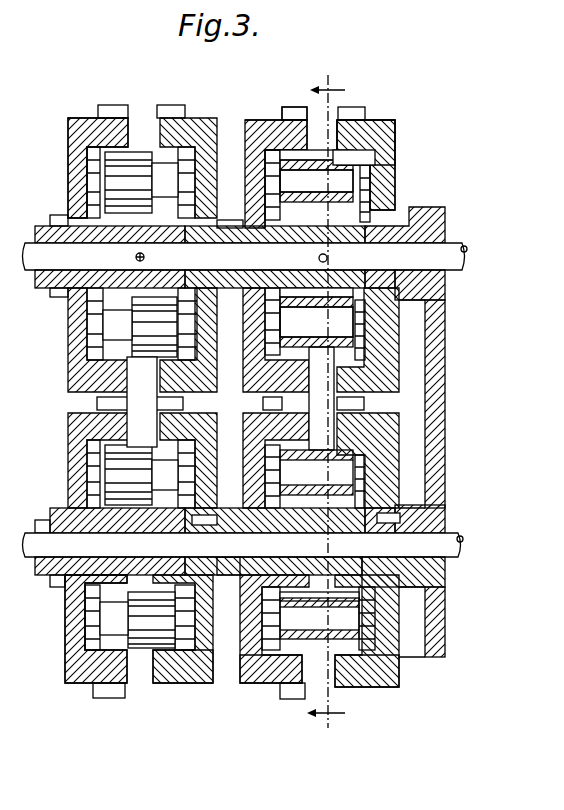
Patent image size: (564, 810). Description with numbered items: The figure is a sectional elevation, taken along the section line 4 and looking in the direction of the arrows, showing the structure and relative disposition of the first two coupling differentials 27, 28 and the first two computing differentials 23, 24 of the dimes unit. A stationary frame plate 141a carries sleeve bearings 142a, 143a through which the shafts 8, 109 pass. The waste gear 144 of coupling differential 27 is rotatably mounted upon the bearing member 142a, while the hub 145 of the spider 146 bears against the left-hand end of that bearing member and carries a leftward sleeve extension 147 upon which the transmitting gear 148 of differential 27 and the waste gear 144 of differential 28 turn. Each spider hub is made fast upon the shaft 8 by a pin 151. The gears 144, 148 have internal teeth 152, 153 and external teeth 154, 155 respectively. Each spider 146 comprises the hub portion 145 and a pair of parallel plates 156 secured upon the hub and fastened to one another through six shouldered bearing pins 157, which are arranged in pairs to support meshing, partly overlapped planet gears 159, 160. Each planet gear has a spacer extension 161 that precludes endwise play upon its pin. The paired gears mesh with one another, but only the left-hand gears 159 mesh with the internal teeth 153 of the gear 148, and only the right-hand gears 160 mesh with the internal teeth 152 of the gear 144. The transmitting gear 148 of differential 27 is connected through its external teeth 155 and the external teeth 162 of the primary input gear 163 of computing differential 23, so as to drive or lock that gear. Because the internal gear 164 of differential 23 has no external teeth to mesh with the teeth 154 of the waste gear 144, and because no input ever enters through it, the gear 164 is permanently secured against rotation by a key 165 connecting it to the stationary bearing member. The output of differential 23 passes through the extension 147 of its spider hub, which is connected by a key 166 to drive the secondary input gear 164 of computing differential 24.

The section line 4- 4 is at (326, 403).
The shaft 8 is at (466, 258).
The computing differential 23 is at (407, 692).
The computing differential 24 is at (58, 676).
The coupling differential 27 is at (391, 111).
The coupling differential 28 is at (60, 106).
The shaft 109 is at (462, 553).
The stationary frame plate 141a is at (437, 417).
The sleeve bearing 142a is at (434, 278).
The sleeve bearing 143a is at (410, 517).
The waste gear 144 is at (197, 122).
The hub 145 is at (412, 215).
The spider 146 is at (372, 128).
The sleeve extension 147 is at (42, 232).
The transmitting gear 148 is at (85, 122).
The pin 151 is at (135, 257).
The internal teeth 152 is at (360, 158).
The internal teeth 153 is at (273, 150).
The external teeth 154 is at (359, 113).
The external teeth 155 is at (294, 112).
The plates 156 is at (270, 195).
The bearing pins 157 is at (305, 182).
The planet gear 159 is at (133, 157).
The planet gear 160 is at (147, 354).
The spacer extension 161 is at (345, 160).
The external teeth 162 is at (278, 402).
The primary input gear 163 is at (258, 677).
The internal gear 164 is at (180, 677).
The key 165 is at (382, 520).
The key 166 is at (207, 520).